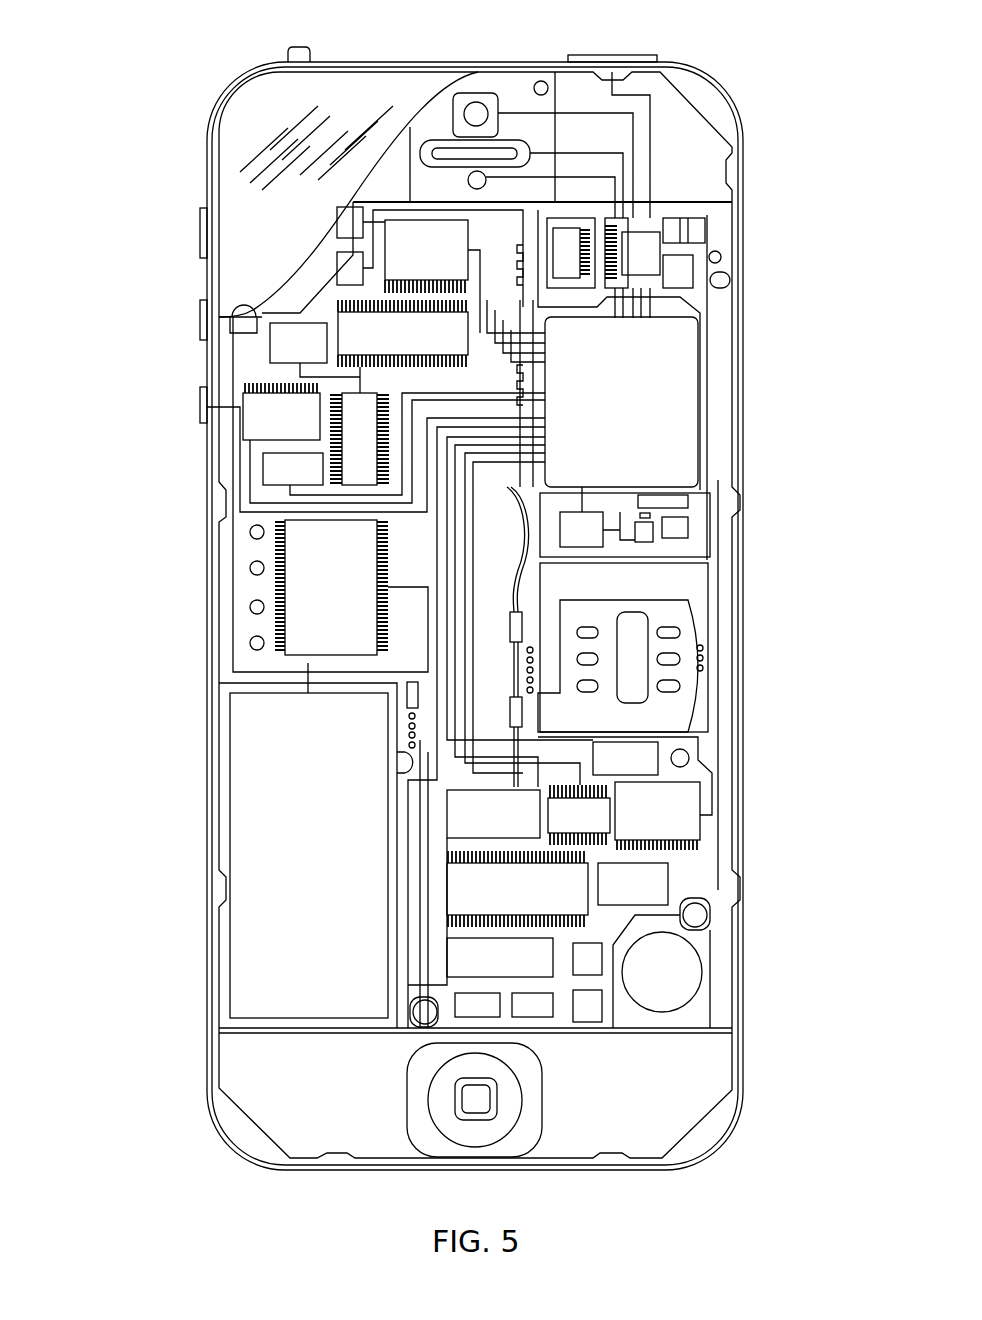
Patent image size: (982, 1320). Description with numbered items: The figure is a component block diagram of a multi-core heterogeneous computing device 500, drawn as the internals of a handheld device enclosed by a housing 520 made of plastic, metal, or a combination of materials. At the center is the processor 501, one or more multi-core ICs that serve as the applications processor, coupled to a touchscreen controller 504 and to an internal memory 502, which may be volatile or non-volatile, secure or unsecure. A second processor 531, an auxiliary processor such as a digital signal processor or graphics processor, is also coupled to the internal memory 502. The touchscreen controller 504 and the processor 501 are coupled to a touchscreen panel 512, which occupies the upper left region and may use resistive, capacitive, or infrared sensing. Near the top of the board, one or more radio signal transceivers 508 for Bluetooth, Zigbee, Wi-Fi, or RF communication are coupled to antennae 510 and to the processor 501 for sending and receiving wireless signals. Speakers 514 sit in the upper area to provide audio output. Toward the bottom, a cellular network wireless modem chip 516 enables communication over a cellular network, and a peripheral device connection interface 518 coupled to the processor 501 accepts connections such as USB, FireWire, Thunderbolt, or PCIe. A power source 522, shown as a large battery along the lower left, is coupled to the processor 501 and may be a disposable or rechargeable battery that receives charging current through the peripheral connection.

The multi-core heterogeneous computing device 500 is at (180, 76).
The processor 501 is at (637, 412).
The internal memory 502 is at (420, 343).
The touchscreen controller 504 is at (442, 259).
The radio signal transceivers 508 is at (653, 232).
The antennae 510 is at (693, 270).
The touchscreen panel 512 is at (235, 193).
The speakers 514 is at (437, 140).
The cellular network wireless modem chip 516 is at (534, 897).
The peripheral device connection interface 518 is at (515, 966).
The housing 520 is at (745, 1006).
The power source 522 is at (325, 864).
The second processor 531 is at (375, 447).